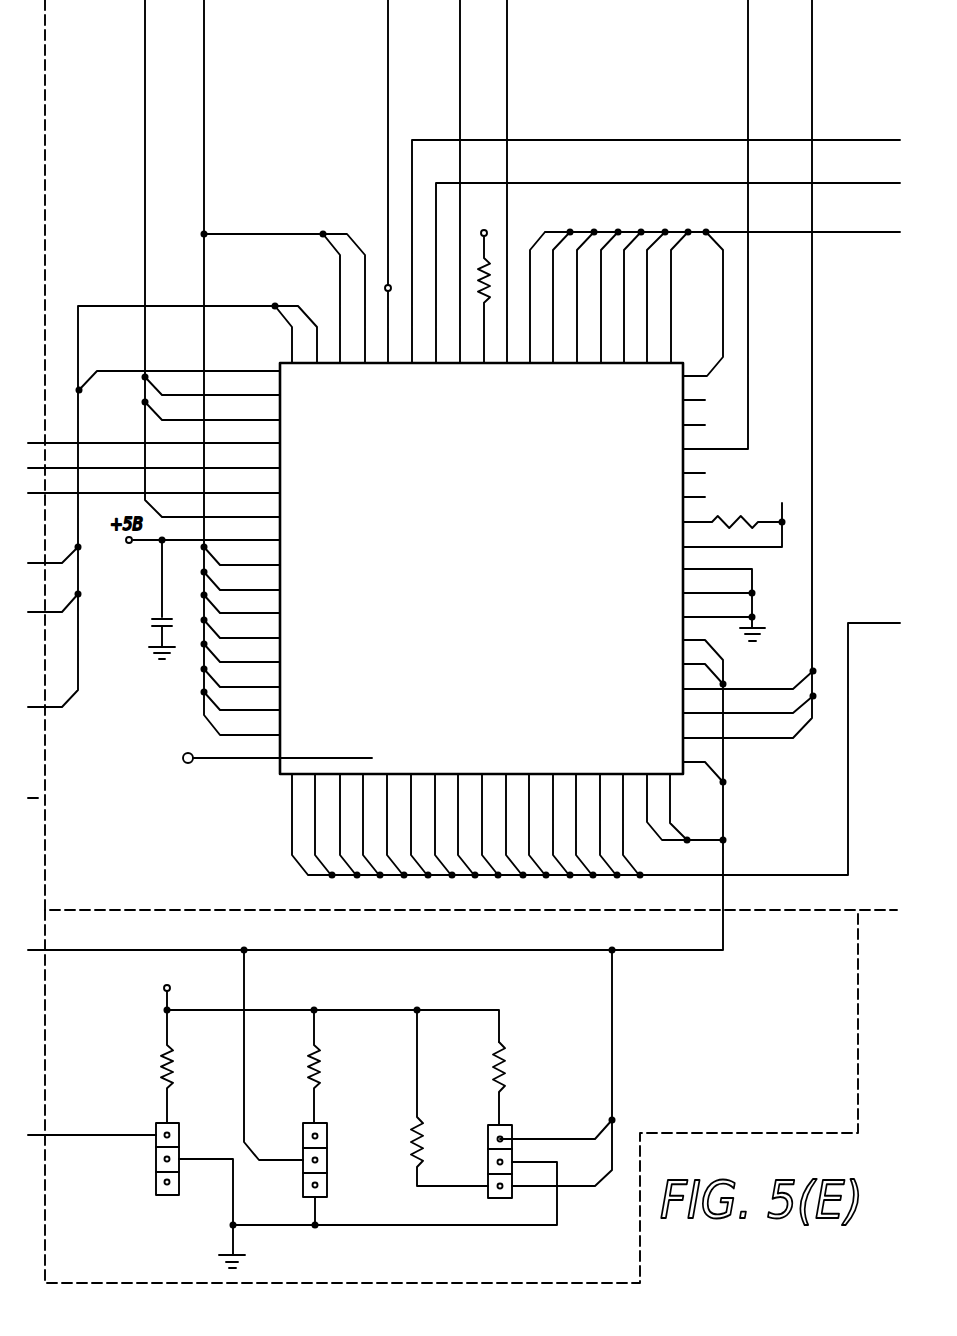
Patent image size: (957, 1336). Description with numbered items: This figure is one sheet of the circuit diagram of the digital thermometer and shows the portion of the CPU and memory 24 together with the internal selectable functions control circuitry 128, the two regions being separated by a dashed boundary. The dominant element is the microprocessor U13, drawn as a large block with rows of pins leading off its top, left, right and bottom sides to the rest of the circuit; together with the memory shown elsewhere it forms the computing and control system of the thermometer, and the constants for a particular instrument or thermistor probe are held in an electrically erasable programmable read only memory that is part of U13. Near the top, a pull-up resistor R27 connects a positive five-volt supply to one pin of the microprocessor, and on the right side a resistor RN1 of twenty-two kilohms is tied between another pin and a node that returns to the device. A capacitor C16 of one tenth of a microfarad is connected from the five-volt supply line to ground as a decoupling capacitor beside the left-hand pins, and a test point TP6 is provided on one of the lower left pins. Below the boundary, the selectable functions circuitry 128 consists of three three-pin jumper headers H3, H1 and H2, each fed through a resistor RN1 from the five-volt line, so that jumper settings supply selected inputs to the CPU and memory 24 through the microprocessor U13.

The CPU and memory 24 is at (338, 26).
The selectable functions control circuitry 128 is at (800, 1058).
The microprocessor U13 is at (283, 773).
The resistor R27 is at (480, 268).
The resistor RN1 is at (747, 522).
The capacitor C16 is at (156, 618).
The test point TP6 is at (271, 746).
The jumper header H1 is at (328, 1185).
The jumper header H2 is at (500, 1198).
The jumper header H3 is at (167, 1197).